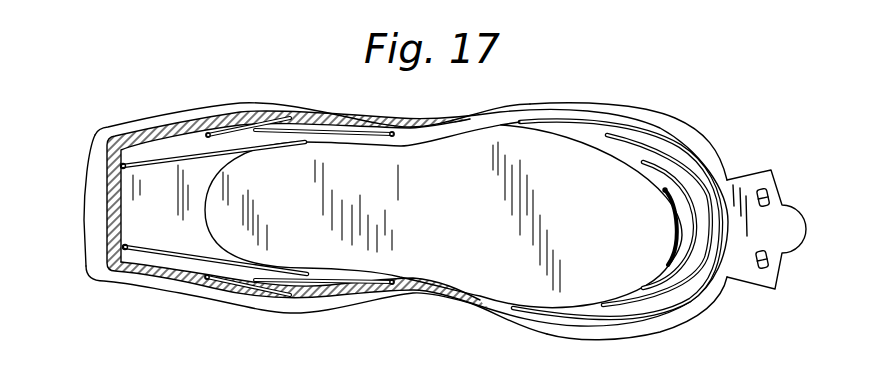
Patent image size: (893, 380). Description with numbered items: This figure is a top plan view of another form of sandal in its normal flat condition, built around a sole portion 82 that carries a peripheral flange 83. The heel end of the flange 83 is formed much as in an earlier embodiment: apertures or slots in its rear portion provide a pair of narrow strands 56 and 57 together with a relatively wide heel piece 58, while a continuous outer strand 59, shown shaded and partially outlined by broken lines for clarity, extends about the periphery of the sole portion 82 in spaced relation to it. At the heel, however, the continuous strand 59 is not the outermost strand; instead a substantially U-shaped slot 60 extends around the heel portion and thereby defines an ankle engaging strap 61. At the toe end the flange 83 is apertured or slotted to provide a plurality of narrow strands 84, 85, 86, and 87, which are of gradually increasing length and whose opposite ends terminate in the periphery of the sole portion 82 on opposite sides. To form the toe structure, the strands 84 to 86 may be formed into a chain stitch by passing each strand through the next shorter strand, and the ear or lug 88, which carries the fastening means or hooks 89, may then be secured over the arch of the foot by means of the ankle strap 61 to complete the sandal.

The narrow strand 56 is at (298, 278).
The narrow strand 57 is at (253, 142).
The heel piece 58 is at (93, 240).
The continuous outer strand 59 is at (173, 138).
The U-shaped slot 60 is at (165, 284).
The ankle engaging strap 61 is at (103, 143).
The sole portion 82 is at (442, 206).
The peripheral flange 83 is at (453, 120).
The narrow strand 84 is at (673, 192).
The narrow strand 85 is at (690, 188).
The narrow strand 86 is at (700, 280).
The narrow strand 87 is at (687, 315).
The ear or lug 88 is at (777, 197).
The fastening means or hooks 89 is at (764, 190).